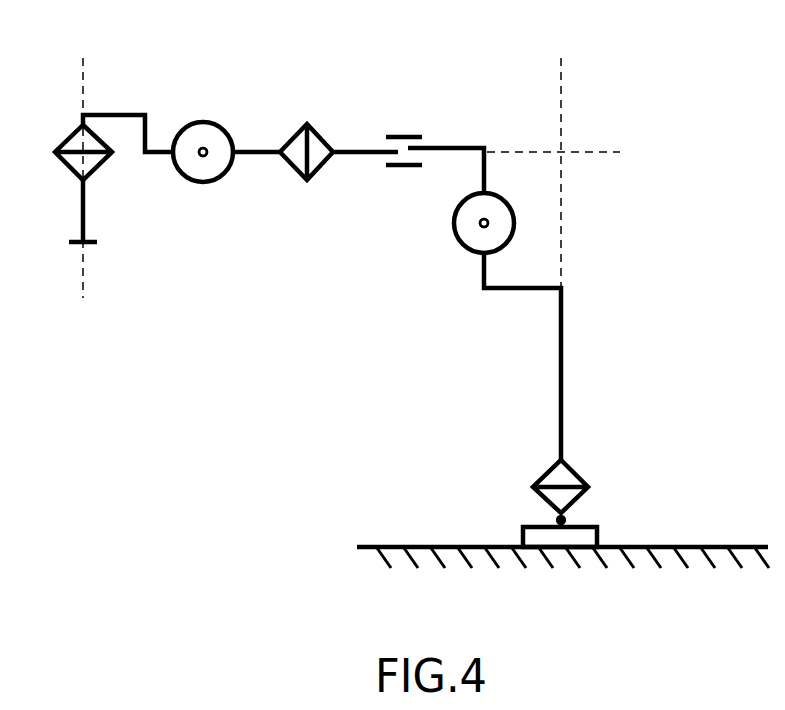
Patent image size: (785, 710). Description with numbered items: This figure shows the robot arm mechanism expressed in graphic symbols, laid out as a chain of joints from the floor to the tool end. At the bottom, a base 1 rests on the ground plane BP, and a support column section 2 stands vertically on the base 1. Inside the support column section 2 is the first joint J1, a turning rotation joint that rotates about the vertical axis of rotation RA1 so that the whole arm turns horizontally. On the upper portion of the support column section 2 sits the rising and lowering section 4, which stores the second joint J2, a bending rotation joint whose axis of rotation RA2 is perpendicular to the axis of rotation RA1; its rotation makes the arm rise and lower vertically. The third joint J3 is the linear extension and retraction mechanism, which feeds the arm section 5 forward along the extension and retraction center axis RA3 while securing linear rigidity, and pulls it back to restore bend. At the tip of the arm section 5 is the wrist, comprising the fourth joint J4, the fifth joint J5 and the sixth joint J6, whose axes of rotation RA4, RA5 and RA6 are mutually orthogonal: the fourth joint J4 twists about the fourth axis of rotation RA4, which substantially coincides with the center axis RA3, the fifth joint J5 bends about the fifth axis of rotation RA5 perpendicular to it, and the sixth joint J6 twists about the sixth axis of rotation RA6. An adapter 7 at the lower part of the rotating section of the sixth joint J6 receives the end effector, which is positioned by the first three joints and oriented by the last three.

The base 1 is at (522, 534).
The support column section 2 is at (571, 388).
The rising and lowering section 4 is at (514, 218).
The arm section 5 is at (362, 134).
The adapter 7 is at (97, 243).
The first joint J1 is at (576, 485).
The second joint J2 is at (493, 235).
The third joint J3 is at (404, 125).
The fourth joint J4 is at (283, 133).
The fifth joint J5 is at (203, 134).
The sixth joint J6 is at (94, 147).
The axis of rotation RA1 is at (562, 154).
The axis of rotation RA2 is at (486, 221).
The extension and retraction center axis RA3 is at (609, 152).
The fourth axis of rotation RA4 is at (609, 152).
The fifth axis of rotation RA5 is at (204, 148).
The sixth axis of rotation RA6 is at (88, 159).
The base plane BP is at (563, 543).